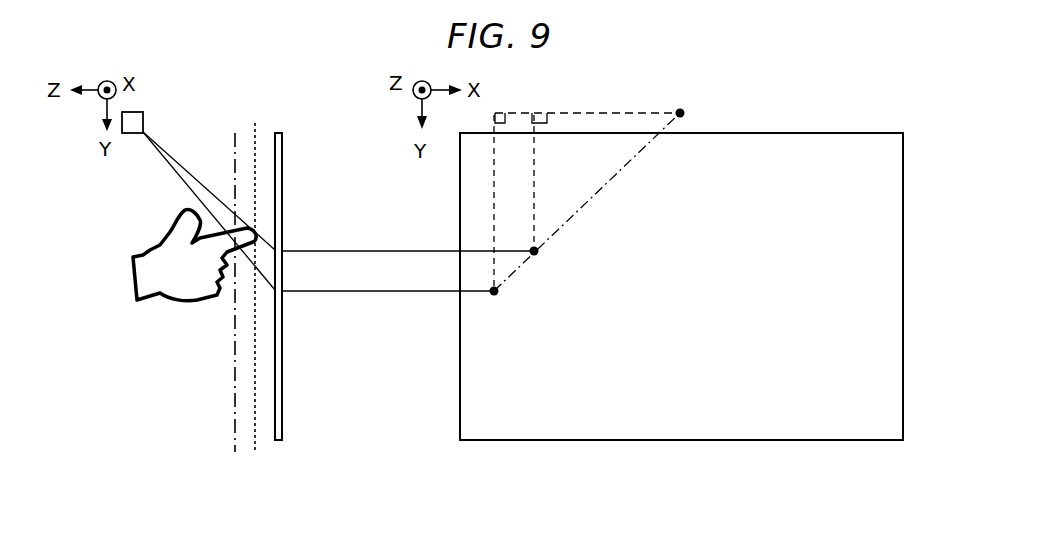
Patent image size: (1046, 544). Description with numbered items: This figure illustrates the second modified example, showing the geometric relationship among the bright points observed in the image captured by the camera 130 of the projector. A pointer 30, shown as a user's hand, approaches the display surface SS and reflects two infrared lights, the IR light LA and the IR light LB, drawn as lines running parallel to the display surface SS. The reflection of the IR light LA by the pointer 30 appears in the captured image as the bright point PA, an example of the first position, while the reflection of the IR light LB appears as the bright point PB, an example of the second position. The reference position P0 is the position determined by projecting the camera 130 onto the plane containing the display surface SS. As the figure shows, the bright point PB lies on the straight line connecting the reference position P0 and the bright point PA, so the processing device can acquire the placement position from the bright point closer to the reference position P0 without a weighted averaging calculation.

The camera 130 is at (135, 134).
The pointer 30 is at (192, 303).
The display surface SS is at (281, 441).
The IR light LA is at (255, 123).
The IR light LB is at (235, 133).
The bright point PA is at (538, 253).
The bright point PB is at (498, 292).
The reference position P0 is at (684, 112).